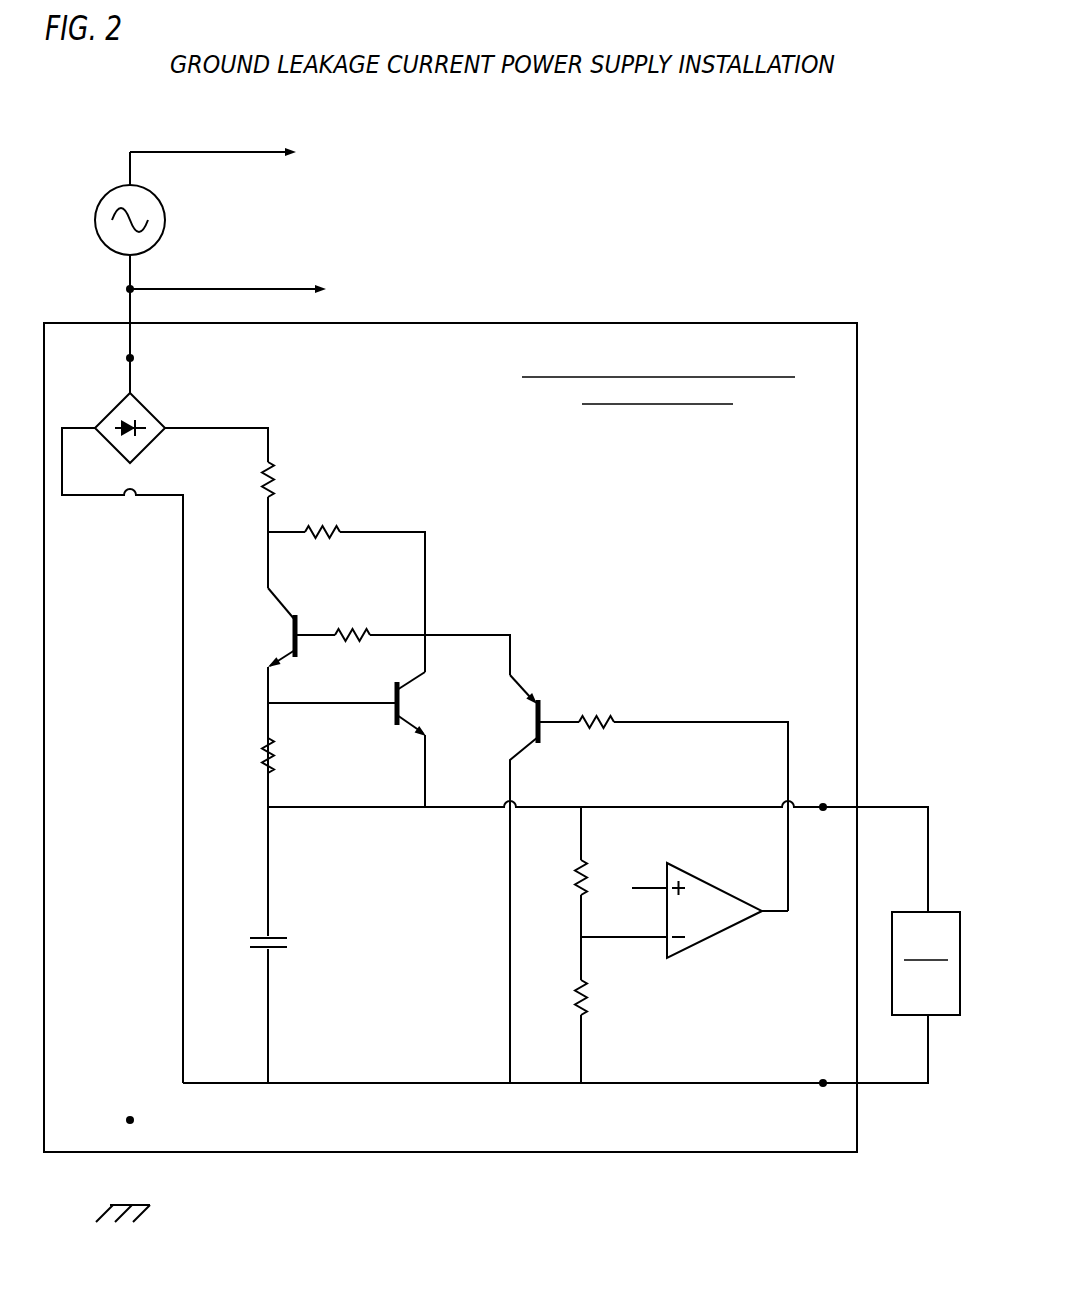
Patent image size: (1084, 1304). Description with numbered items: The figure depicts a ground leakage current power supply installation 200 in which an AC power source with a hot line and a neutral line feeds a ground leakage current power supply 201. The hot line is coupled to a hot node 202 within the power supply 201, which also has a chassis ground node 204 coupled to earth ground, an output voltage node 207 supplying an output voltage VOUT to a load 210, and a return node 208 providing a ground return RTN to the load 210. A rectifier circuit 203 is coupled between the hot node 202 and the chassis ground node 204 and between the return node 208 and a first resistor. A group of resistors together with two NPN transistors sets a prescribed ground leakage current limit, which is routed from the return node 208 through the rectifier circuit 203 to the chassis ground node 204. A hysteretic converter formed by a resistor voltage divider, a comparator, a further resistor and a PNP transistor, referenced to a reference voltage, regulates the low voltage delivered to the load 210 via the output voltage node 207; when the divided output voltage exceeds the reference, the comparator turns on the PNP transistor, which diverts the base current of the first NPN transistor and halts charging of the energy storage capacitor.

The ground leakage current power supply installation 200 is at (827, 196).
The ground leakage current power supply 201 is at (673, 431).
The hot node 202 is at (130, 358).
The rectifier circuit 203 is at (148, 408).
The chassis ground node 204 is at (130, 1120).
The output voltage node 207 is at (823, 810).
The return node 208 is at (823, 1083).
The load 210 is at (913, 984).